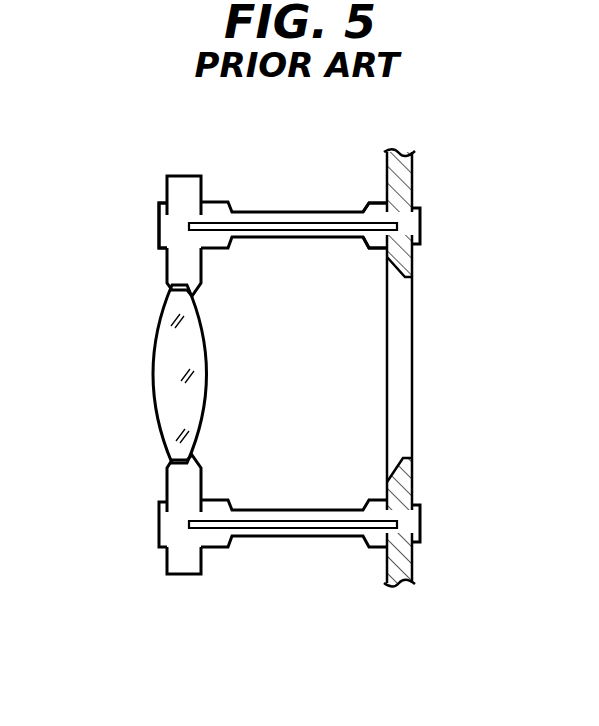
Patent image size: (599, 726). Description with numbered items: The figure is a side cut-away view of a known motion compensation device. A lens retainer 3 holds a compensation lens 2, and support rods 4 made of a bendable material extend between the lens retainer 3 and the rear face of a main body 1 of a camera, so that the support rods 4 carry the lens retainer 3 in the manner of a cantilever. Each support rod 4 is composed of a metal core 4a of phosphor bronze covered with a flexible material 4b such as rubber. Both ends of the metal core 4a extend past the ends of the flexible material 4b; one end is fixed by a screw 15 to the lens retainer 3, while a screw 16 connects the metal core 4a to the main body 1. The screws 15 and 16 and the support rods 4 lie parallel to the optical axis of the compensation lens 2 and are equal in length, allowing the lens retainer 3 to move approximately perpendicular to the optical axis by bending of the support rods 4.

The main body 1 is at (403, 562).
The compensation lens 2 is at (165, 392).
The lens retainer 3 is at (182, 195).
The support rod 4 is at (300, 211).
The metal core 4a is at (268, 222).
The flexible material 4b is at (373, 212).
The screw 15 is at (159, 232).
The screw 16 is at (405, 227).